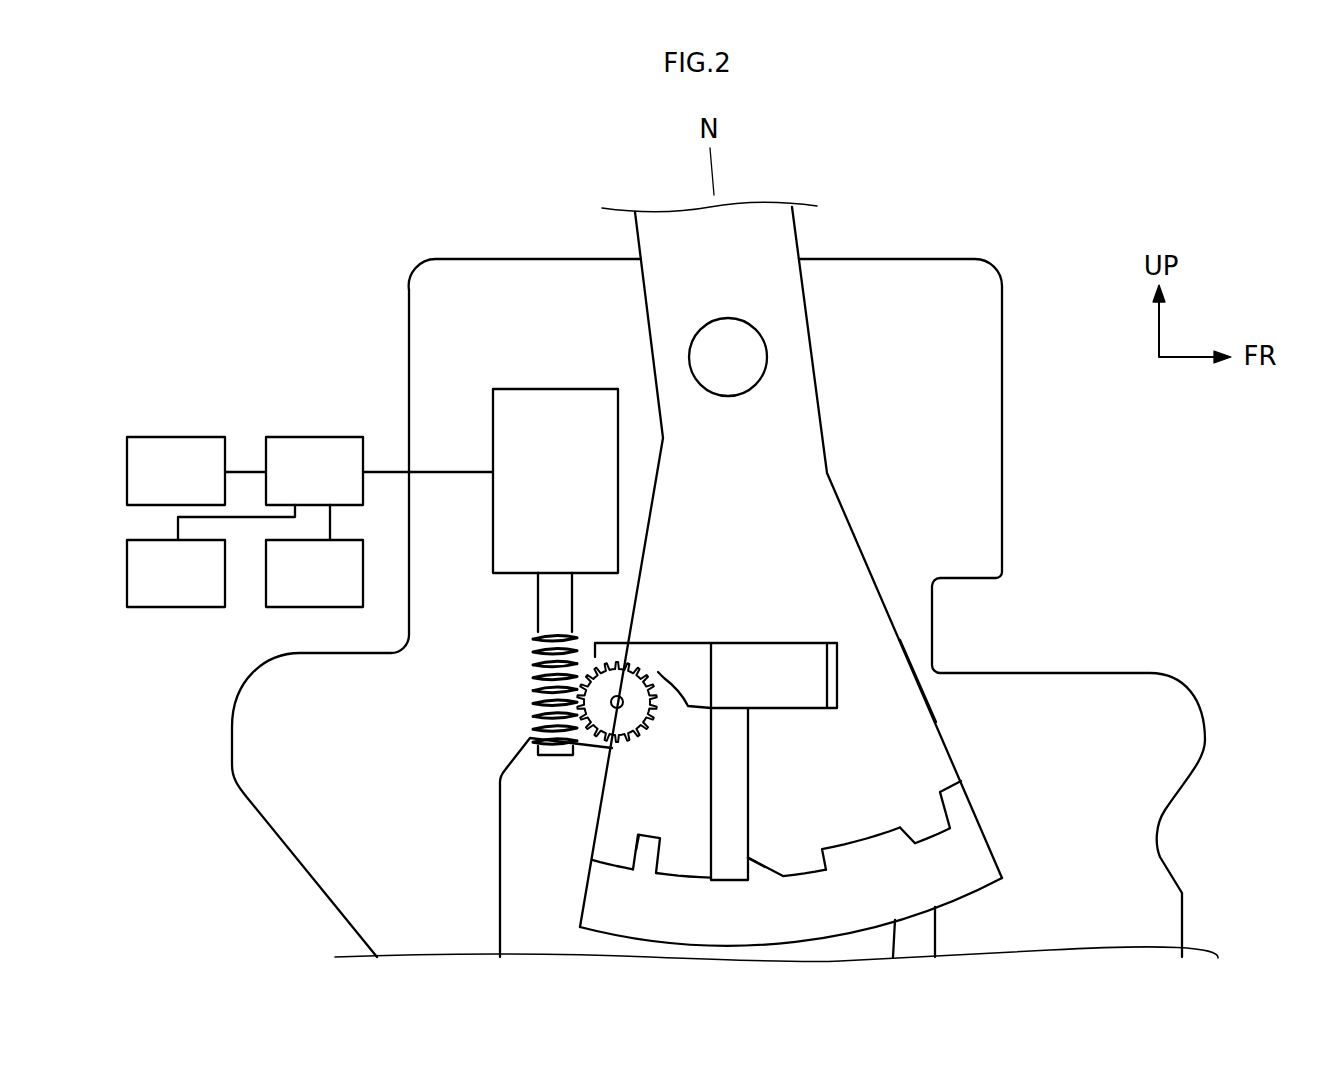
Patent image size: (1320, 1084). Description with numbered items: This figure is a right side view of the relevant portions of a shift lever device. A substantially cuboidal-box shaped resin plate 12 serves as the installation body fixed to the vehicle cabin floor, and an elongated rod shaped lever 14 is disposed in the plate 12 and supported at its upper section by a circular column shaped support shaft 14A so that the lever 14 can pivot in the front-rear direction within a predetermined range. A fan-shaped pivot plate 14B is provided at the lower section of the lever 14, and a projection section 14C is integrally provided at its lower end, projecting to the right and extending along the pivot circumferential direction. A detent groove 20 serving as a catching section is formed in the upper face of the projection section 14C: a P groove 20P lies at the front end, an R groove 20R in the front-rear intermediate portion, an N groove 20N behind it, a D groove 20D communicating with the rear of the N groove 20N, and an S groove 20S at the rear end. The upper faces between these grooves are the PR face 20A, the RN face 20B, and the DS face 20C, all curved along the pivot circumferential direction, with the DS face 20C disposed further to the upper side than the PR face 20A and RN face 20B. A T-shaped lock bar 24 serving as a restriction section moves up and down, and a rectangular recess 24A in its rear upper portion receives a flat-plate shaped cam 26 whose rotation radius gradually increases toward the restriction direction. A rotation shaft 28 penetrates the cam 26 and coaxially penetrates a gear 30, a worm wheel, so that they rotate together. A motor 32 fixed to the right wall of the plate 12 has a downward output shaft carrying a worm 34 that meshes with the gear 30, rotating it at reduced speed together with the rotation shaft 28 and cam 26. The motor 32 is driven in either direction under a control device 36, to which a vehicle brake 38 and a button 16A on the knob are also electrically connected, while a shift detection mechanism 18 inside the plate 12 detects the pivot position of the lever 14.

The plate 12 is at (415, 258).
The lever 14 is at (626, 236).
The support shaft 14A is at (767, 355).
The pivot plate 14B is at (927, 698).
The projection section 14C is at (985, 845).
The button 16A is at (182, 437).
The shift detection mechanism 18 is at (175, 607).
The detent groove 20 is at (737, 830).
The PR face 20A is at (870, 825).
The RN face 20B is at (757, 862).
The DS face 20C is at (650, 831).
The D groove 20D is at (682, 872).
The N groove 20N is at (745, 860).
The P groove 20P is at (945, 826).
The R groove 20R is at (797, 868).
The S groove 20S is at (606, 860).
The lock bar 24 is at (750, 725).
The recess 24A is at (662, 674).
The cam 26 is at (593, 752).
The rotation shaft 28 is at (625, 703).
The gear 30 is at (648, 738).
The motor 32 is at (555, 389).
The worm 34 is at (533, 687).
The control device 36 is at (318, 437).
The brake 38 is at (312, 607).